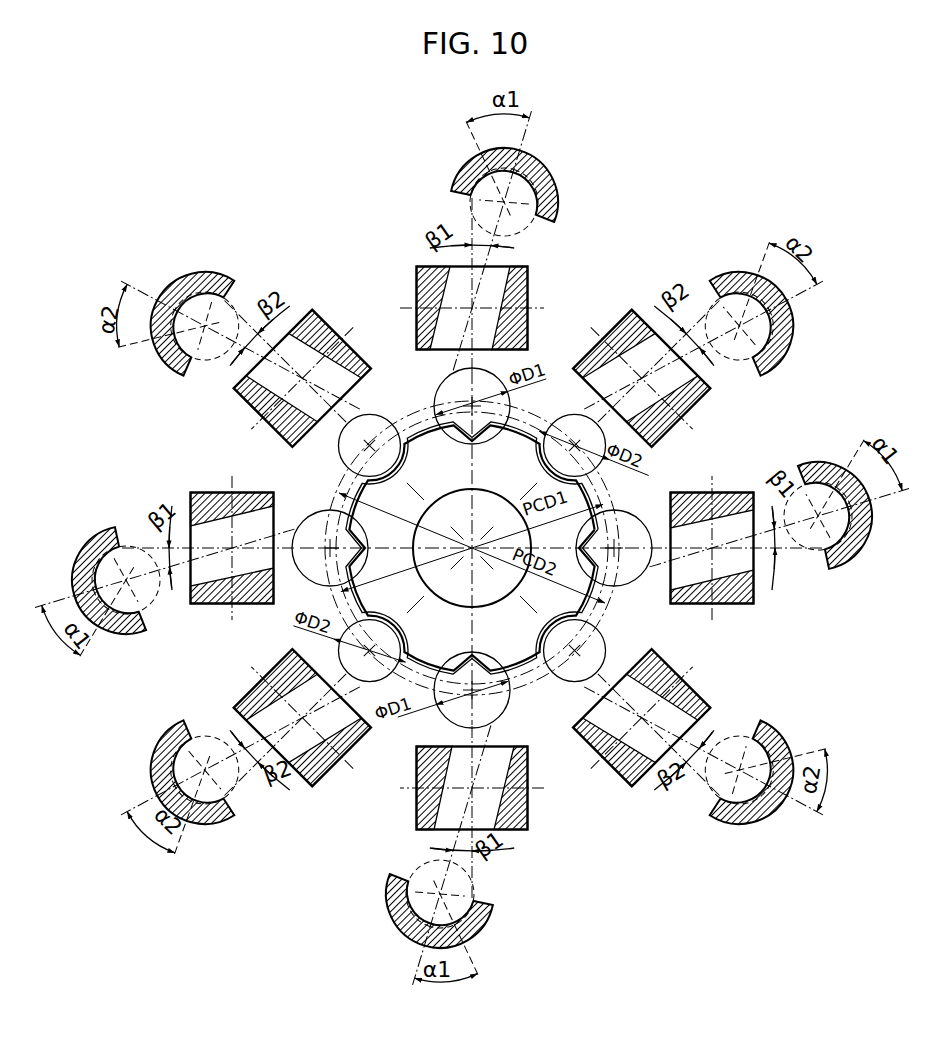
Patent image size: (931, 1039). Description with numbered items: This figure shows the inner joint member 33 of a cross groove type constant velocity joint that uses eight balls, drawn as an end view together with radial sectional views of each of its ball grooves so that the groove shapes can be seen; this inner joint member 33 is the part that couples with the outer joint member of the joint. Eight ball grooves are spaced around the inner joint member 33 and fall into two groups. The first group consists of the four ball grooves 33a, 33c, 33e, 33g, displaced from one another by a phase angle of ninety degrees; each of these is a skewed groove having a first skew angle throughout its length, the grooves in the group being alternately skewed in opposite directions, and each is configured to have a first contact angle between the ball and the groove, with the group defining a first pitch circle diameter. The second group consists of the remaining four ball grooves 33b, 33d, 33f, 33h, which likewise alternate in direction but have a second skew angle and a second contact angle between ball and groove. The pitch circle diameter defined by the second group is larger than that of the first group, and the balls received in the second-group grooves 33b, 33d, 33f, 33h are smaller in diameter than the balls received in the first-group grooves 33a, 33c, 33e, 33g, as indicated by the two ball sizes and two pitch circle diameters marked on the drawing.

The inner joint member 33 is at (410, 408).
The ball groove 33a is at (418, 270).
The ball groove 33b is at (632, 310).
The ball groove 33c is at (747, 490).
The ball groove 33d is at (712, 707).
The ball groove 33e is at (528, 832).
The ball groove 33f is at (313, 787).
The ball groove 33g is at (205, 604).
The ball groove 33h is at (233, 389).